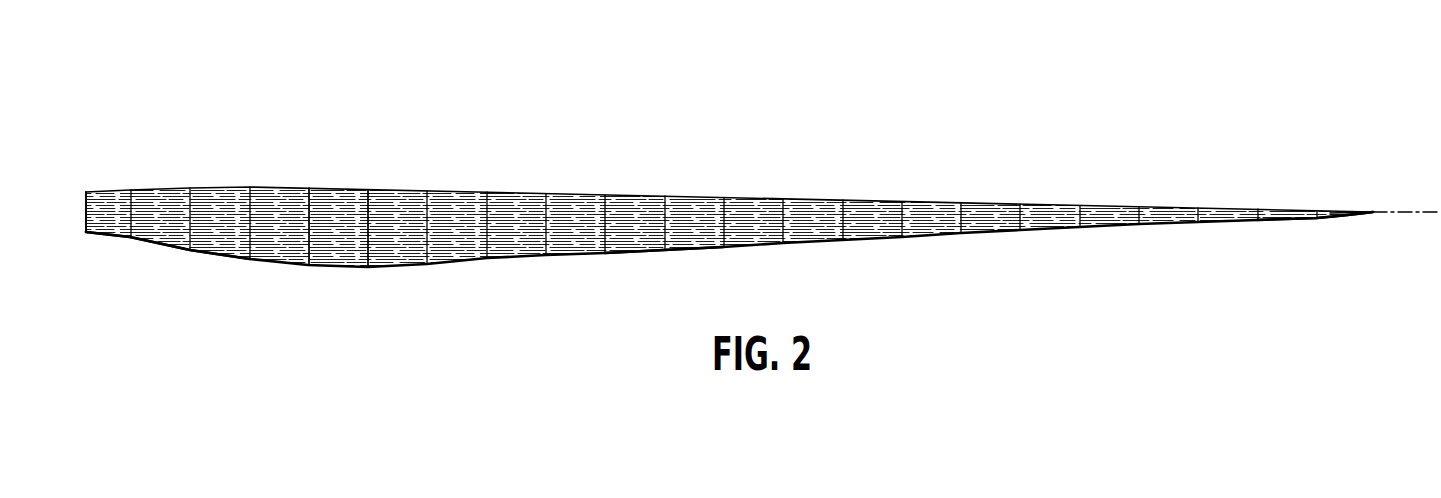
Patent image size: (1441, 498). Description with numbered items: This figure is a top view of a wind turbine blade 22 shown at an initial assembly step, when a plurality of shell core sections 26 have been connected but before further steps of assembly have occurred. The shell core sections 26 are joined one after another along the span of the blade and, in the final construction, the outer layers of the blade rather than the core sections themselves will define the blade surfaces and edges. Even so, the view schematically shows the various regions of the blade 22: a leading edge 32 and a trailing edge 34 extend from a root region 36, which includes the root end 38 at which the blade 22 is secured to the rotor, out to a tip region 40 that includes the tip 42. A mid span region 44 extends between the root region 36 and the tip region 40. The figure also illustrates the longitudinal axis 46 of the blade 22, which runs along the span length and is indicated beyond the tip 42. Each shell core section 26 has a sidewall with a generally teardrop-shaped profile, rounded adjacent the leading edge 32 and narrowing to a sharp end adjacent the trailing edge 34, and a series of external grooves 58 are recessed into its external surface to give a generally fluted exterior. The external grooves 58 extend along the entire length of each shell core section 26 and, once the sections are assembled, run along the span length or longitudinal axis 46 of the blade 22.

The wind turbine blade 22 is at (682, 97).
The shell core sections 26 is at (215, 258).
The leading edge 32 is at (633, 193).
The trailing edge 34 is at (335, 269).
The root region 36 is at (132, 262).
The root end 38 is at (86, 218).
The tip region 40 is at (1326, 236).
The tip 42 is at (1374, 211).
The mid span region 44 is at (664, 274).
The longitudinal axis 46 is at (1410, 218).
The external grooves 58 is at (355, 207).